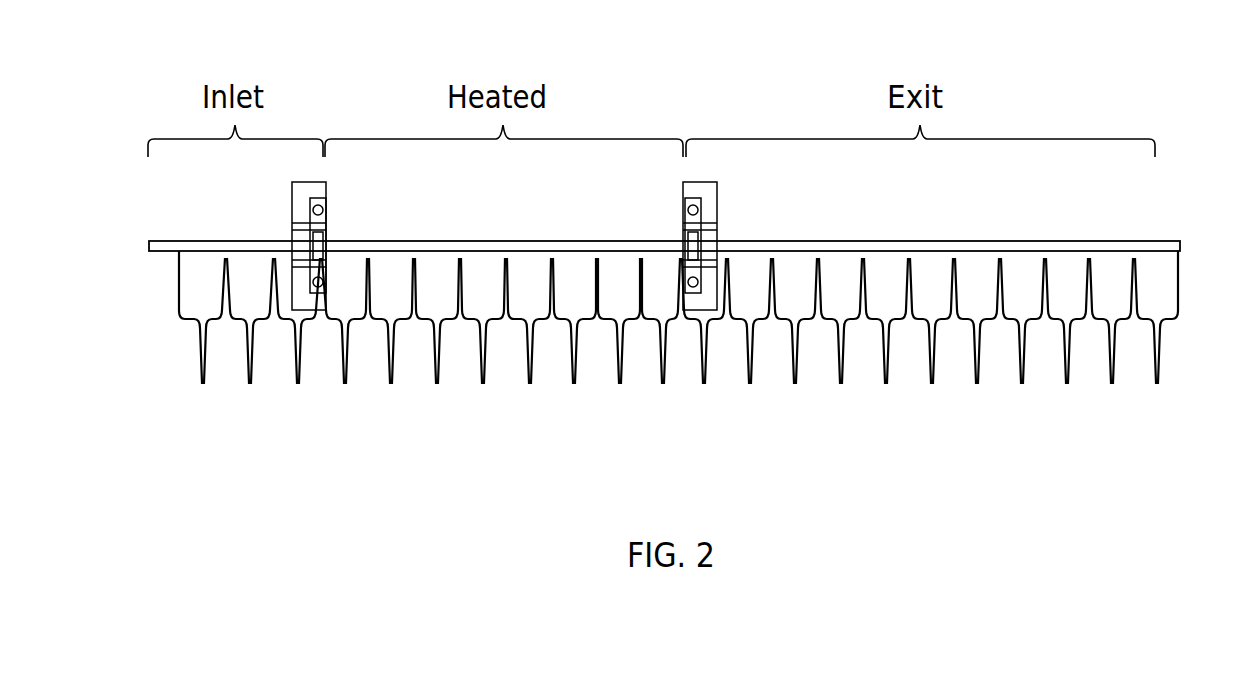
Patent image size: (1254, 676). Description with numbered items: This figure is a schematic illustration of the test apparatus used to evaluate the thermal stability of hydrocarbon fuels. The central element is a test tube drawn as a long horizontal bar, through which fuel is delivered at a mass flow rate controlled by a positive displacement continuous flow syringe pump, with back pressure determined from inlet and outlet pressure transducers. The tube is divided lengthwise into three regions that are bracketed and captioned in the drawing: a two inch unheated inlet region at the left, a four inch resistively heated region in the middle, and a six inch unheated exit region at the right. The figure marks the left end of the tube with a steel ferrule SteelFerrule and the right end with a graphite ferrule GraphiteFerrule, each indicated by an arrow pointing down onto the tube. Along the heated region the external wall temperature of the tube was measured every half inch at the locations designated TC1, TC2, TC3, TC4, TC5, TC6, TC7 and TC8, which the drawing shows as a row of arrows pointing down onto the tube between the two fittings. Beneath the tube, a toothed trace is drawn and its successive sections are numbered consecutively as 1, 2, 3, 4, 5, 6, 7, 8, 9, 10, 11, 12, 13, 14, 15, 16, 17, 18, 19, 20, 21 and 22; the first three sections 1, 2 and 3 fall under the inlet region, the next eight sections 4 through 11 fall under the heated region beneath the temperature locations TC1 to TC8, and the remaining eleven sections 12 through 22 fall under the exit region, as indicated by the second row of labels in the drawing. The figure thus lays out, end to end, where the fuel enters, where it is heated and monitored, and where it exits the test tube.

The inlet zone I1 1 is at (202, 354).
The inlet zone I2 2 is at (250, 358).
The inlet zone I3 3 is at (297, 358).
The heated zone H1 4 is at (344, 358).
The heated zone H2 5 is at (391, 358).
The heated zone H3 6 is at (437, 358).
The heated zone H4 7 is at (483, 358).
The heated zone H5 8 is at (529, 358).
The heated zone H6 9 is at (574, 358).
The heated zone H7 10 is at (619, 358).
The heated zone H8 11 is at (661, 358).
The exit zone E1 12 is at (704, 358).
The exit zone E2 13 is at (749, 358).
The exit zone E3 14 is at (795, 358).
The exit zone E4 15 is at (840, 358).
The exit zone E5 16 is at (886, 358).
The exit zone E6 17 is at (931, 358).
The exit zone E7 18 is at (977, 358).
The exit zone E8 19 is at (1022, 358).
The exit zone E9 20 is at (1067, 358).
The exit zone E10 21 is at (1113, 358).
The exit zone E11 22 is at (1157, 354).
The wall temperature measurement location TC1 is at (345, 242).
The wall temperature measurement location TC2 is at (391, 242).
The wall temperature measurement location TC3 is at (437, 242).
The wall temperature measurement location TC4 is at (483, 242).
The wall temperature measurement location TC5 is at (530, 242).
The wall temperature measurement location TC6 is at (574, 242).
The wall temperature measurement location TC7 is at (620, 242).
The wall temperature measurement location TC8 is at (665, 242).
The steel ferrule SteelFerrule is at (163, 242).
The graphite ferrule GraphiteFerrule is at (1156, 240).